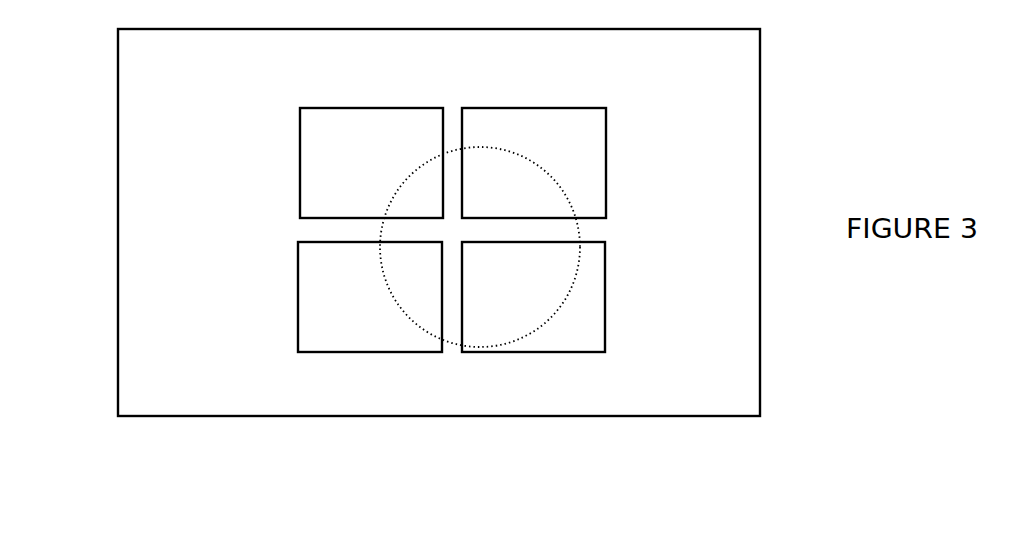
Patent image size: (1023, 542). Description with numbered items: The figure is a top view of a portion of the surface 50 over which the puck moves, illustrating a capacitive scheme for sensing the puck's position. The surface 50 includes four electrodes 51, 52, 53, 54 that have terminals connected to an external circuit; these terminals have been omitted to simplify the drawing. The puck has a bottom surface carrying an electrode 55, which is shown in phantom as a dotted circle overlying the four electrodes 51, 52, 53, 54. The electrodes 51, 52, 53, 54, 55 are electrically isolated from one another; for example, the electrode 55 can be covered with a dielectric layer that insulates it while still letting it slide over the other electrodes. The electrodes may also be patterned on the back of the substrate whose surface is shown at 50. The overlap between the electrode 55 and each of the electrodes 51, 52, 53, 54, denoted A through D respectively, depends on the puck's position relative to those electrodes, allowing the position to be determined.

The surface 50 is at (758, 90).
The electrode 51 is at (303, 148).
The electrode 52 is at (602, 132).
The electrode 53 is at (303, 327).
The electrode 54 is at (600, 336).
The electrode 55 is at (578, 228).